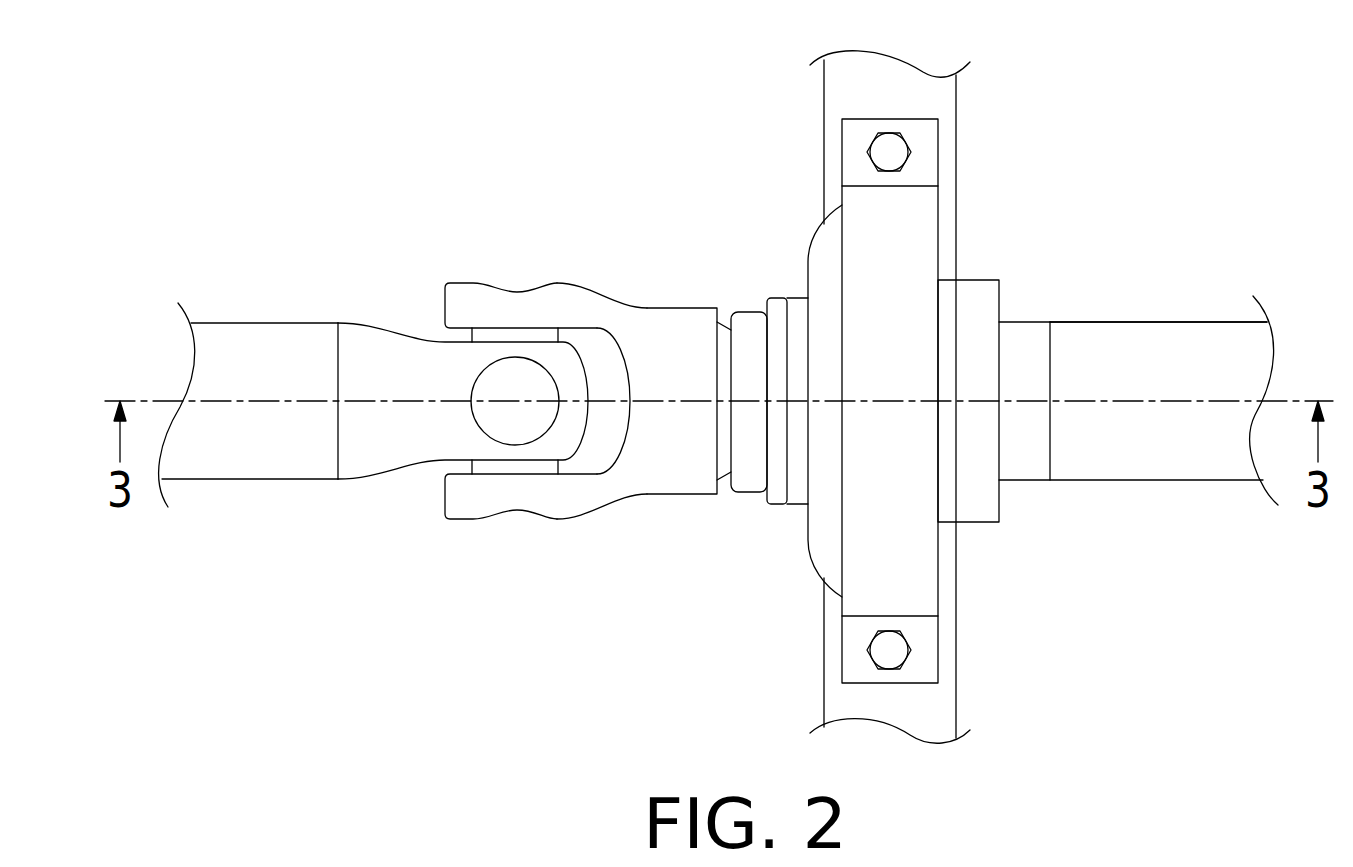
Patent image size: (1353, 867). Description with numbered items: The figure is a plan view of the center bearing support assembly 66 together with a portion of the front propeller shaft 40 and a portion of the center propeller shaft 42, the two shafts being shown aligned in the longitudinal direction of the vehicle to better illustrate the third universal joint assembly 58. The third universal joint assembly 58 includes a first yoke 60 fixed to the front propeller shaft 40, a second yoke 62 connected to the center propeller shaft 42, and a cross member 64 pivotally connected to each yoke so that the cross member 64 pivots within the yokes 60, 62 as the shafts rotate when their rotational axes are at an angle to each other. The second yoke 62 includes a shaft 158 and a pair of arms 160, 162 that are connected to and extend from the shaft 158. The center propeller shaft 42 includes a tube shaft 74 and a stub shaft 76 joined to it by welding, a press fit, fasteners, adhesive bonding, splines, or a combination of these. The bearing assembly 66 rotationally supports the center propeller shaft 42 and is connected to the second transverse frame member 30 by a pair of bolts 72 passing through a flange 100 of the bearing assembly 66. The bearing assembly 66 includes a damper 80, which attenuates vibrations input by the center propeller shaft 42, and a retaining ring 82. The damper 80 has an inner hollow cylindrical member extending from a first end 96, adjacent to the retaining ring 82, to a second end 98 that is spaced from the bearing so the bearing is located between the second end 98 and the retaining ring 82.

The second transverse frame member 30 is at (956, 203).
The front propeller shaft 40 is at (247, 494).
The center propeller shaft 42 is at (1152, 497).
The third universal joint assembly 58 is at (520, 569).
The first yoke 60 is at (373, 458).
The second yoke 62 is at (669, 507).
The cross member 64 is at (516, 335).
The center bearing support assembly 66 is at (991, 593).
The bolts 72 is at (890, 153).
The tube shaft 74 is at (1163, 335).
The stub shaft 76 is at (1035, 335).
The damper 80 is at (784, 223).
The retaining ring 82 is at (740, 507).
The first end 96 is at (787, 340).
The second end 98 is at (1000, 508).
The flange 100 is at (856, 137).
The shaft 158 is at (680, 327).
The arm 160 is at (457, 297).
The arm 162 is at (460, 505).